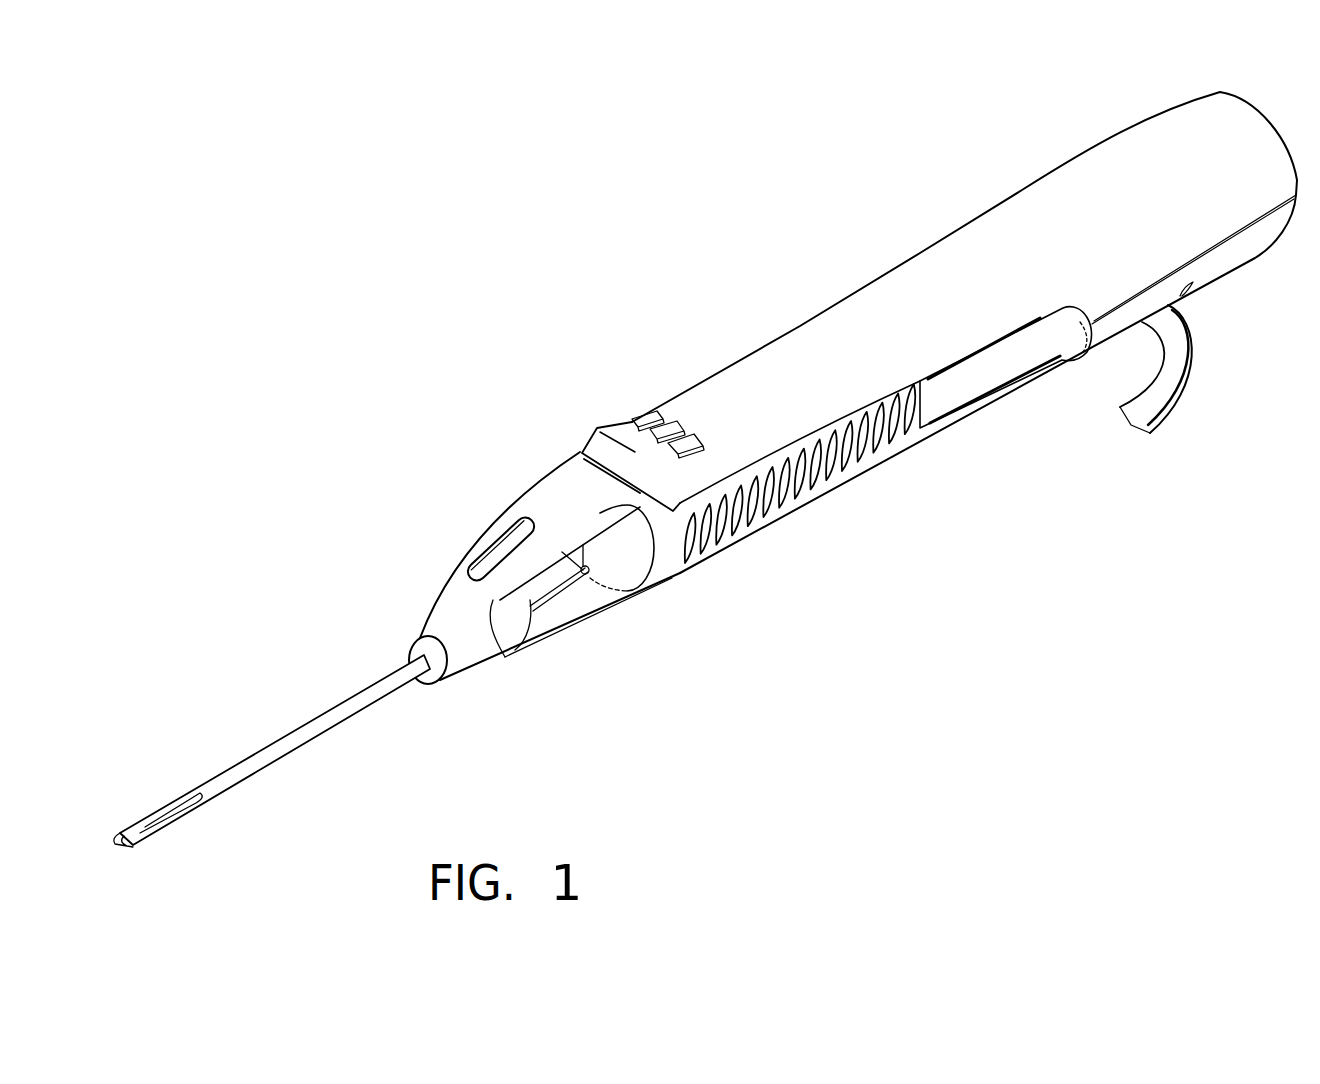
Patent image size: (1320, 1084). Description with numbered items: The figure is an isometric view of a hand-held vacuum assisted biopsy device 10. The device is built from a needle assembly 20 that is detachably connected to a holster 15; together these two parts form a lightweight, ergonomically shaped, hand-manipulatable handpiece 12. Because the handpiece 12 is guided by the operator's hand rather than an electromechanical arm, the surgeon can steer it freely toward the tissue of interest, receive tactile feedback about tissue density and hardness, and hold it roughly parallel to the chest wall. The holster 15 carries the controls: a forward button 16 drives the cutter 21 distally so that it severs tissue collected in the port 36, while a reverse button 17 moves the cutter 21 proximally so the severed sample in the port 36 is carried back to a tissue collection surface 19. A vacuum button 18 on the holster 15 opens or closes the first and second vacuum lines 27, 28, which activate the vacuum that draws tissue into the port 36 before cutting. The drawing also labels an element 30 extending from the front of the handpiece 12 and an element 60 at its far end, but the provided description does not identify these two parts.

The hand-held vacuum assisted biopsy device 10 is at (592, 338).
The handpiece 12 is at (705, 563).
The holster 15 is at (798, 388).
The forward button 16 is at (648, 413).
The reverse button 17 is at (668, 423).
The vacuum button 18 is at (688, 440).
The tissue collection surface 19 is at (572, 598).
The needle assembly 20 is at (501, 499).
The cutter 21 is at (580, 573).
The first vacuum line 27 is at (1160, 359).
The second vacuum line 28 is at (1193, 343).
The needle 30 is at (304, 750).
The port 36 is at (180, 802).
The needle tip 60 is at (122, 843).